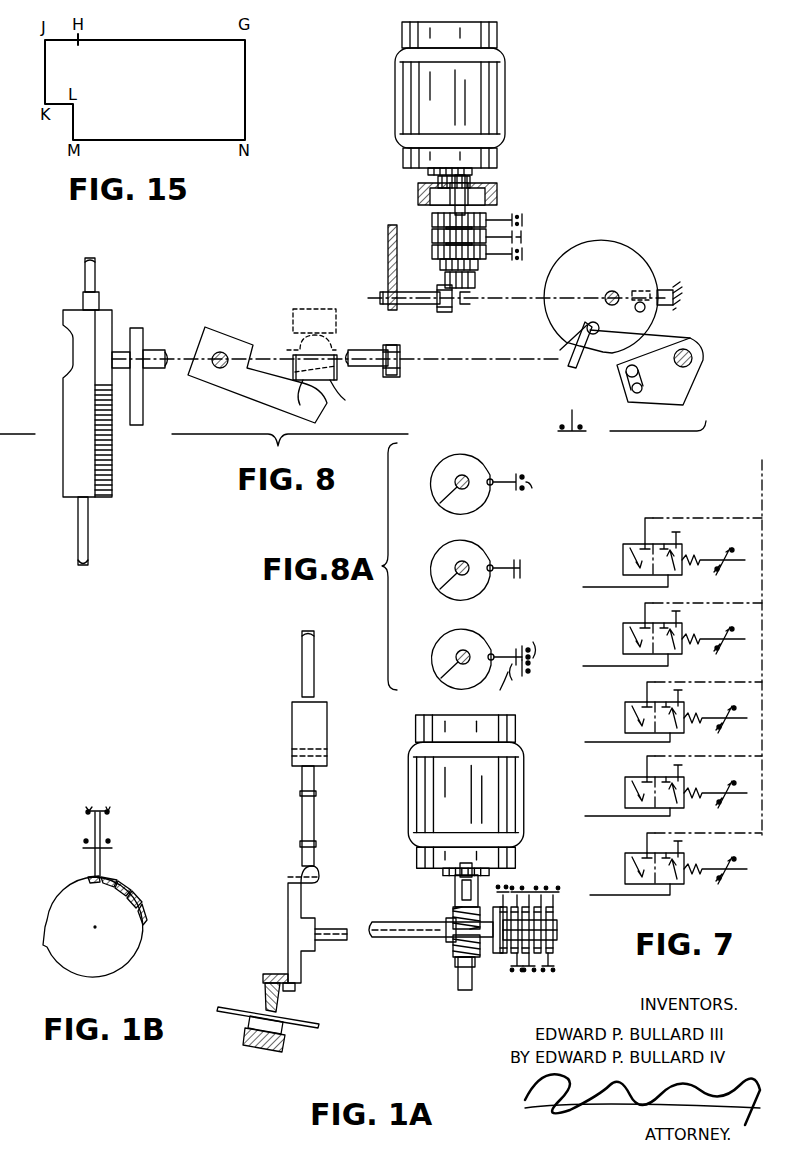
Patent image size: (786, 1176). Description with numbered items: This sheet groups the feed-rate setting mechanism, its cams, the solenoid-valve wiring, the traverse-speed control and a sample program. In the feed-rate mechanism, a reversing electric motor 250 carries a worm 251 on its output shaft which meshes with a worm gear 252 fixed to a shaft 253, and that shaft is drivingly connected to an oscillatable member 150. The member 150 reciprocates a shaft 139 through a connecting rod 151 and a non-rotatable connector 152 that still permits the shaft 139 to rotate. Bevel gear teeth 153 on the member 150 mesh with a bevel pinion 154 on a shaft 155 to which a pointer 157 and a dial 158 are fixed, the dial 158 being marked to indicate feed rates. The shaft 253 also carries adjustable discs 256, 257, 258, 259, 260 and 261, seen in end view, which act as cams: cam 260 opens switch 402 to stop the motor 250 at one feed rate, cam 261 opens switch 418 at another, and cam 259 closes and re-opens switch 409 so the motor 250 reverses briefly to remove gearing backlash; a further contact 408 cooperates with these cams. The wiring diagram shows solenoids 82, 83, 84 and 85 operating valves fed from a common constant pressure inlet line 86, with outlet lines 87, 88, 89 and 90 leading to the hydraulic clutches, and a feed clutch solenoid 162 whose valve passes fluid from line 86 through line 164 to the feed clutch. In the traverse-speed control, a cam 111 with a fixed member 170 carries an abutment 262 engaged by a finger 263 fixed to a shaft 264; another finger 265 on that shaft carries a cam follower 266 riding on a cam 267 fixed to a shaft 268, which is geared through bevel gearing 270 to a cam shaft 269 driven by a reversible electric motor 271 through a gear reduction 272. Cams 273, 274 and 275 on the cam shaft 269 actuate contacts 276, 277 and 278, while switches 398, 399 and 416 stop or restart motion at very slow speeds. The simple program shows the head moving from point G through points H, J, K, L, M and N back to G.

In FIG. 8, the reversible electric motor 271 is at (396, 92).
In FIG. 8, the gear reduction 272 is at (404, 186).
In FIG. 8, the cam shaft 269 is at (470, 186).
In FIG. 8A, the cam shaft 269 is at (440, 502).
In FIG. 8, the cam 273 is at (488, 220).
In FIG. 8A, the cam 273 is at (447, 463).
In FIG. 8, the cam 274 is at (432, 234).
In FIG. 8A, the cam 274 is at (441, 553).
In FIG. 8, the cam 275 is at (444, 262).
In FIG. 8A, the cam 275 is at (445, 645).
In FIG. 8, the contact 276 is at (525, 216).
In FIG. 8A, the contact 276 is at (534, 490).
In FIG. 8, the contact 277 is at (524, 238).
In FIG. 8A, the contact 277 is at (512, 556).
In FIG. 8, the contact 278 is at (490, 262).
In FIG. 8A, the contact 278 is at (492, 674).
In FIG. 8, the cam 267 is at (388, 252).
In FIG. 8, the shaft 268 is at (433, 312).
In FIG. 8, the bevel gearing 270 is at (462, 305).
In FIG. 8, the cam follower 266 is at (397, 330).
In FIG. 8, the finger 265 is at (578, 364).
In FIG. 8, the shaft 264 is at (152, 350).
In FIG. 8, the finger 263 is at (137, 426).
In FIG. 8, the abutment 262 is at (130, 335).
In FIG. 8, the cam 111 is at (63, 452).
In FIG. 8, the member 170 is at (78, 542).
In FIG. 8, the switch 416 is at (588, 430).
In FIG. 8A, the switch 398 is at (528, 638).
In FIG. 8A, the switch 399 is at (512, 678).
In FIG. 7, the constant pressure inlet line 86 is at (762, 482).
In FIG. 7, the solenoid 82 is at (638, 540).
In FIG. 7, the solenoid 83 is at (632, 620).
In FIG. 7, the solenoid 84 is at (637, 700).
In FIG. 7, the solenoid 85 is at (641, 775).
In FIG. 7, the feed clutch solenoid 162 is at (644, 855).
In FIG. 7, the outlet line 87 is at (610, 586).
In FIG. 7, the outlet line 88 is at (610, 665).
In FIG. 7, the outlet line 89 is at (612, 741).
In FIG. 7, the outlet line 90 is at (612, 815).
In FIG. 7, the line 164 is at (620, 894).
In FIG. 1A, the reversing electric motor 250 is at (410, 783).
In FIG. 1A, the worm 251 is at (456, 912).
In FIG. 1A, the worm gear 252 is at (457, 950).
In FIG. 1A, the shaft 253 is at (380, 938).
In FIG. 1A, the adjustable disc 256 is at (497, 953).
In FIG. 1B, the adjustable disc 256 is at (77, 885).
In FIG. 1A, the adjustable disc 257 is at (506, 953).
In FIG. 1B, the adjustable disc 257 is at (107, 878).
In FIG. 1A, the adjustable disc 258 is at (555, 914).
In FIG. 1B, the adjustable disc 258 is at (120, 885).
In FIG. 1A, the adjustable disc 259 is at (556, 926).
In FIG. 1B, the adjustable disc 259 is at (132, 896).
In FIG. 1A, the adjustable disc 260 is at (556, 936).
In FIG. 1B, the adjustable disc 260 is at (142, 907).
In FIG. 1A, the adjustable disc 261 is at (556, 950).
In FIG. 1B, the adjustable disc 261 is at (145, 927).
In FIG. 1A, the contact 408 is at (505, 885).
In FIG. 1B, the contact 408 is at (86, 848).
In FIG. 1A, the switch 402 is at (540, 886).
In FIG. 1A, the switch 409 is at (530, 972).
In FIG. 1B, the switch 409 is at (95, 808).
In FIG. 1A, the switch 418 is at (556, 970).
In FIG. 1A, the shaft 139 is at (302, 684).
In FIG. 1A, the non-rotatable connector 152 is at (298, 734).
In FIG. 1A, the connecting rod 151 is at (302, 822).
In FIG. 1A, the oscillatable member 150 is at (292, 937).
In FIG. 1A, the bevel pinion 154 is at (266, 978).
In FIG. 1A, the bevel gear teeth 153 is at (290, 990).
In FIG. 1A, the shaft 155 is at (263, 1000).
In FIG. 1A, the dial 158 is at (306, 1027).
In FIG. 1A, the pointer 157 is at (272, 1046).